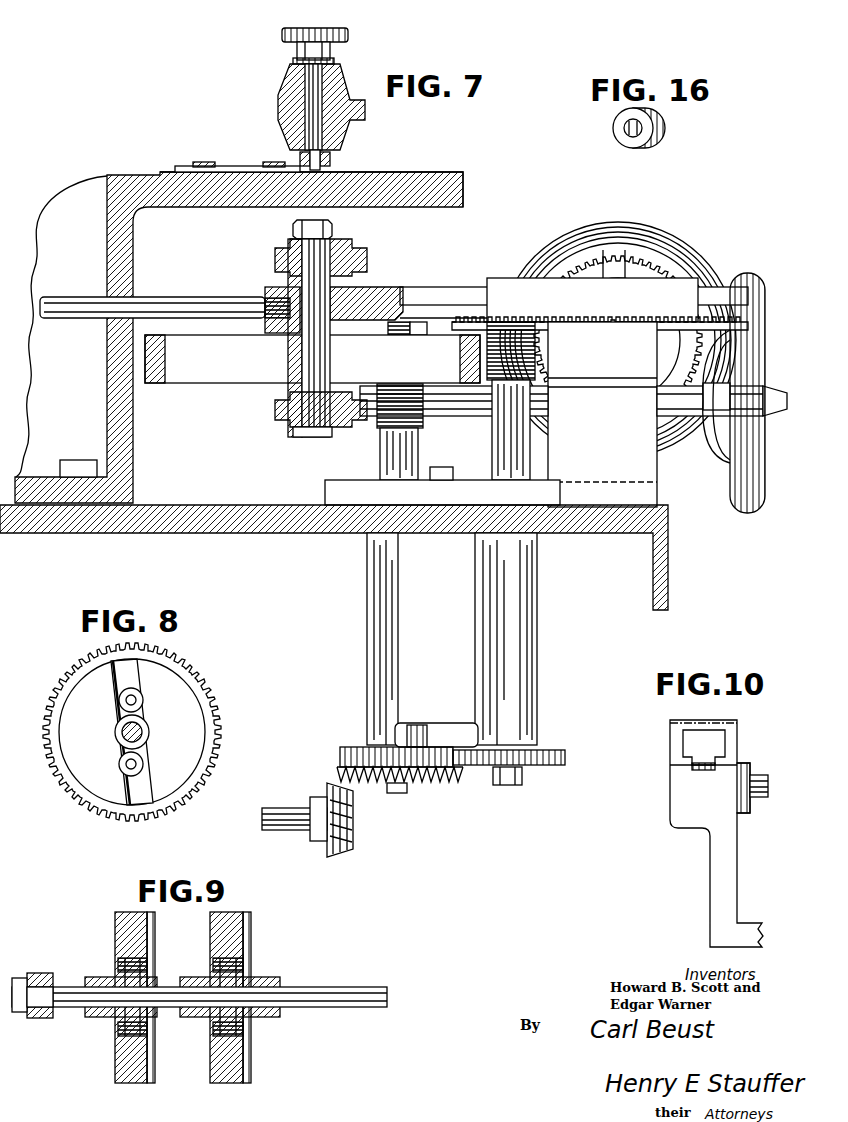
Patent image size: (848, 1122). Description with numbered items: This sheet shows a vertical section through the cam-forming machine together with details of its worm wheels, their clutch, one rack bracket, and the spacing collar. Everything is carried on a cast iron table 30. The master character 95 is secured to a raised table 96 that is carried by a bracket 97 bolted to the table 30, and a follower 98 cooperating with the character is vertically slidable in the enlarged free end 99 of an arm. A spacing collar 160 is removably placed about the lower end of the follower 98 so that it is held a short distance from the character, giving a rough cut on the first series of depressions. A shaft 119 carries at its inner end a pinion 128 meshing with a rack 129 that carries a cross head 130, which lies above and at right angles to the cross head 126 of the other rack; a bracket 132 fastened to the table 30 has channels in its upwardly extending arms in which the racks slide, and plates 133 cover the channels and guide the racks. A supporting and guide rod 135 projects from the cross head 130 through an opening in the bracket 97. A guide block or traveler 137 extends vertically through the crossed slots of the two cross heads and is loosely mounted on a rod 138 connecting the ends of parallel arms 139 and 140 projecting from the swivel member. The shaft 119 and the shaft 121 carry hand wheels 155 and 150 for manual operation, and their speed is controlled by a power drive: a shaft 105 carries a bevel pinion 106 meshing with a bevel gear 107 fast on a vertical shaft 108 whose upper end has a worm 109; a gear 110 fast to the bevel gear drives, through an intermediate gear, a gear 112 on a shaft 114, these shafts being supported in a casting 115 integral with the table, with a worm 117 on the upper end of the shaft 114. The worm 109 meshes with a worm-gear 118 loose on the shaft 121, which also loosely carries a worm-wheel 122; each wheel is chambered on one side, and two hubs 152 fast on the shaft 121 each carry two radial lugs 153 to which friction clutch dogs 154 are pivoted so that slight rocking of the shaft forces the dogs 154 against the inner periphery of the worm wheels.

In FIG. 7, the table 30 is at (218, 534).
In FIG. 7, the master character 95 is at (200, 164).
In FIG. 7, the raised table 96 is at (446, 171).
In FIG. 7, the bracket 97 is at (54, 198).
In FIG. 7, the follower 98 is at (330, 160).
In FIG. 7, the enlarged free end of arm 99 is at (338, 97).
In FIG. 7, the shaft 105 is at (290, 808).
In FIG. 7, the bevel pinion 106 is at (342, 855).
In FIG. 7, the bevel gear 107 is at (438, 786).
In FIG. 7, the shaft 108 is at (396, 793).
In FIG. 7, the worm 109 is at (378, 426).
In FIG. 7, the gear 110 is at (341, 757).
In FIG. 7, the gear 112 is at (565, 757).
In FIG. 7, the shaft 114 is at (506, 785).
In FIG. 7, the casting 115 is at (535, 658).
In FIG. 7, the worm 117 is at (512, 326).
In FIG. 9, the worm-gear 118 is at (130, 1084).
In FIG. 7, the shaft 119 is at (626, 354).
In FIG. 10, the shaft 119 is at (756, 775).
In FIG. 8, the shaft 121 is at (142, 741).
In FIG. 9, the shaft 121 is at (344, 988).
In FIG. 9, the worm-wheel 122 is at (240, 1084).
In FIG. 7, the cross head 126 is at (158, 384).
In FIG. 7, the pinion 128 is at (600, 358).
In FIG. 7, the rack 129 is at (444, 292).
In FIG. 10, the rack 129 is at (716, 731).
In FIG. 7, the cross head 130 is at (266, 291).
In FIG. 7, the bracket 132 is at (658, 473).
In FIG. 10, the bracket 132 is at (712, 884).
In FIG. 7, the plate 133 is at (690, 284).
In FIG. 10, the plate 133 is at (691, 722).
In FIG. 7, the supporting and guide rod 135 is at (175, 303).
In FIG. 7, the guide block or traveler 137 is at (340, 292).
In FIG. 7, the rod 138 is at (300, 361).
In FIG. 7, the arm 139 is at (350, 249).
In FIG. 7, the arm 140 is at (276, 412).
In FIG. 7, the hand wheel 150 is at (744, 514).
In FIG. 8, the hub 152 is at (150, 727).
In FIG. 9, the hub 152 is at (270, 1018).
In FIG. 8, the lug 153 is at (145, 703).
In FIG. 9, the lug 153 is at (247, 960).
In FIG. 8, the friction clutch dog 154 is at (143, 787).
In FIG. 9, the friction clutch dog 154 is at (246, 1056).
In FIG. 7, the hand wheel 155 is at (640, 227).
In FIG. 7, the spacing collar 160 is at (300, 158).
In FIG. 16, the spacing collar 160 is at (656, 137).